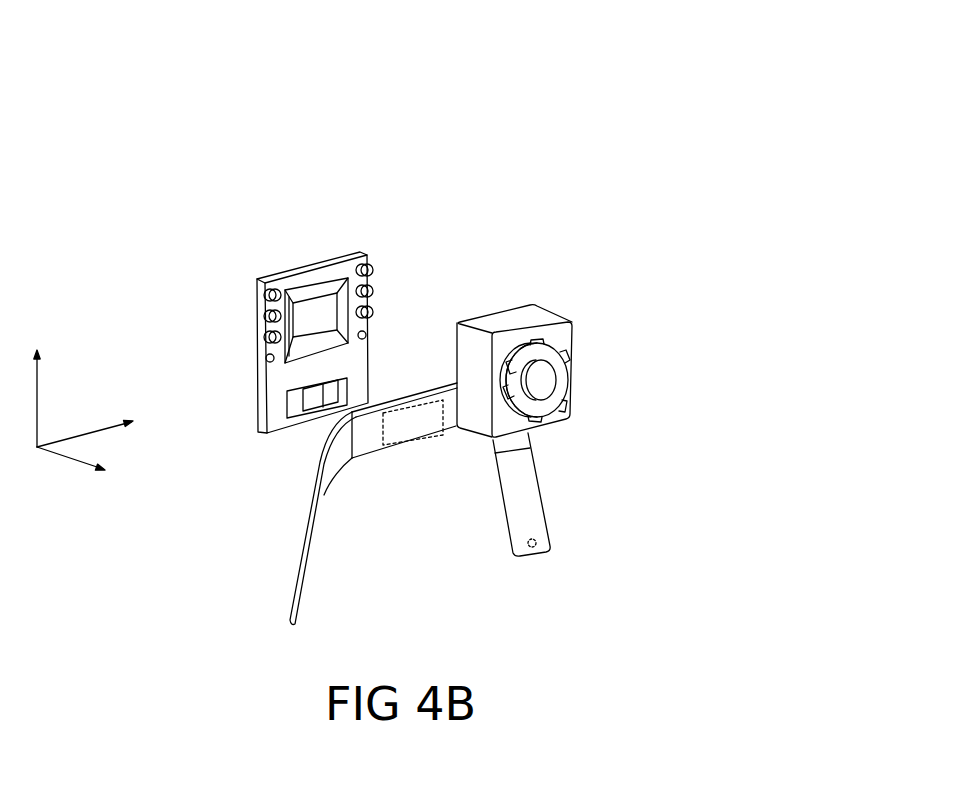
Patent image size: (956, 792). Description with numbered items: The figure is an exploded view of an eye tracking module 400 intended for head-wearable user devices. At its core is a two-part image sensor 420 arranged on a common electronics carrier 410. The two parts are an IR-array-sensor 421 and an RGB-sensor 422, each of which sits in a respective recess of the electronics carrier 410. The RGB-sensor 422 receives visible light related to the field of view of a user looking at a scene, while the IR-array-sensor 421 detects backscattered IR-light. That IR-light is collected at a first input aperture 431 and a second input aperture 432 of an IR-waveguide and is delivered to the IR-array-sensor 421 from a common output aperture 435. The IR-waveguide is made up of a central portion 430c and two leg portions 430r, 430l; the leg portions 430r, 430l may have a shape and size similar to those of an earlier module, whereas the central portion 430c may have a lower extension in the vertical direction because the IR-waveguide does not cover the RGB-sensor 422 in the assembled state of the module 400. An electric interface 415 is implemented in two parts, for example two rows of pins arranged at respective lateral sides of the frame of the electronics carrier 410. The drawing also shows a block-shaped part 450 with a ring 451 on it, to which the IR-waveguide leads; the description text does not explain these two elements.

The eye tracking module 400 is at (419, 62).
The common electronics carrier 410 is at (399, 287).
The electric interface 415 is at (385, 286).
The two-part image sensor 420 is at (454, 280).
The IR-array-sensor 421 is at (330, 392).
The RGB-sensor 422 is at (317, 290).
The central portion of IR-waveguide 430c is at (414, 475).
The right leg portion of IR-waveguide 430r is at (266, 518).
The left leg portion of IR-waveguide 430l is at (605, 518).
The first input aperture 431 is at (286, 599).
The second input aperture 432 is at (545, 553).
The common output aperture 435 is at (416, 422).
The handle block 450 is at (567, 349).
The locking ring 451 is at (549, 401).